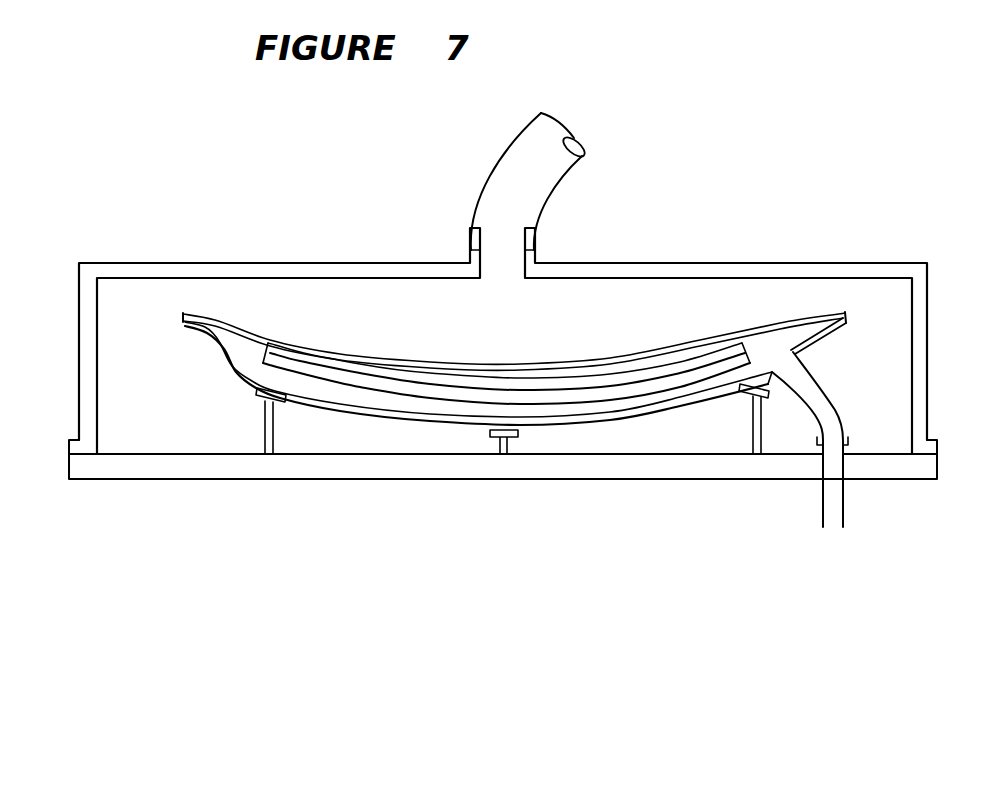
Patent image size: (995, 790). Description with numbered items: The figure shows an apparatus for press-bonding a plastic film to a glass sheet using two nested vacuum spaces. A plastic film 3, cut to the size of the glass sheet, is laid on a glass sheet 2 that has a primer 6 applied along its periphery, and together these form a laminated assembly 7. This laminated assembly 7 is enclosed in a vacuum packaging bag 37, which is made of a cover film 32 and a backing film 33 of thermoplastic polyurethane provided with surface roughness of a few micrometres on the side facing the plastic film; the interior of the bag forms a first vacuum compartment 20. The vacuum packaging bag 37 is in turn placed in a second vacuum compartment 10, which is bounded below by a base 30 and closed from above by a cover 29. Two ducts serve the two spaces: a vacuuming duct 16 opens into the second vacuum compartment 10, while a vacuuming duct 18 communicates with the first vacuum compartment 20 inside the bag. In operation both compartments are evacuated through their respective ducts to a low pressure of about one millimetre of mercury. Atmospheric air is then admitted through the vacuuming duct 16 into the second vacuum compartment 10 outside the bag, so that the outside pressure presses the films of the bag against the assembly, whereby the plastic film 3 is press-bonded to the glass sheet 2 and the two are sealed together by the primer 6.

The glass sheet 2 is at (322, 378).
The plastic film 3 is at (292, 350).
The primer layer 6 is at (268, 392).
The laminated assembly 7 is at (719, 347).
The second vacuum compartment 10 is at (665, 306).
The vacuuming duct 16 is at (513, 187).
The vacuuming duct 18 is at (830, 517).
The first vacuum compartment 20 is at (335, 355).
The cover 29 is at (148, 273).
The base 30 is at (141, 467).
The cover film 32 is at (605, 355).
The backing film 33 is at (588, 426).
The vacuum packaging bag 37 is at (395, 347).